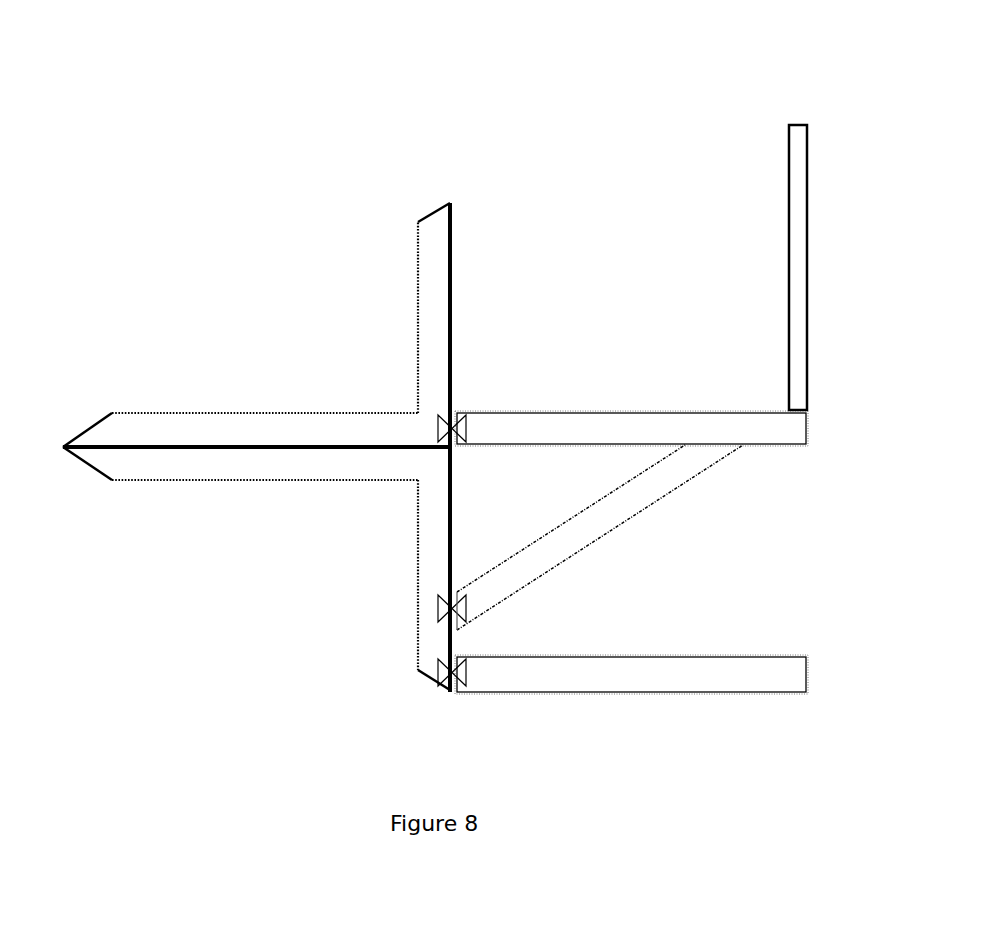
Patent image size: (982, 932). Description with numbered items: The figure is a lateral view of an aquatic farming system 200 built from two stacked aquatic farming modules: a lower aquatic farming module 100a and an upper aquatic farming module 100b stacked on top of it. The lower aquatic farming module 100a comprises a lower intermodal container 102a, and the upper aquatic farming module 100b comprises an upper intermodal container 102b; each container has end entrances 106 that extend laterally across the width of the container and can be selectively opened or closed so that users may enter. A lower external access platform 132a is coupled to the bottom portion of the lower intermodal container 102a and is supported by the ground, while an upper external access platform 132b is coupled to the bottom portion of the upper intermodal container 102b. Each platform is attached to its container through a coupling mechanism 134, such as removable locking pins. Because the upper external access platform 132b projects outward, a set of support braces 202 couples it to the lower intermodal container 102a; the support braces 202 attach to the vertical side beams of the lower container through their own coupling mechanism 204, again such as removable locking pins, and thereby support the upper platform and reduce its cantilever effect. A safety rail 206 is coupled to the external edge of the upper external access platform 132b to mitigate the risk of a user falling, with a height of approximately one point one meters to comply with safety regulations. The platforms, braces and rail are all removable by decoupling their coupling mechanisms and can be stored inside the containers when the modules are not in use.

The aquatic farming system 200 is at (157, 103).
The lower aquatic farming module 100a is at (187, 517).
The upper aquatic farming module 100b is at (165, 385).
The lower intermodal container 102a is at (297, 470).
The upper intermodal container 102b is at (330, 423).
The end entrance 106 is at (432, 230).
The coupling mechanism 134 is at (455, 427).
The coupling mechanism 204 is at (440, 612).
The support brace 202 is at (683, 467).
The lower external access platform 132a is at (749, 676).
The upper external access platform 132b is at (705, 423).
The safety rail 206 is at (797, 213).